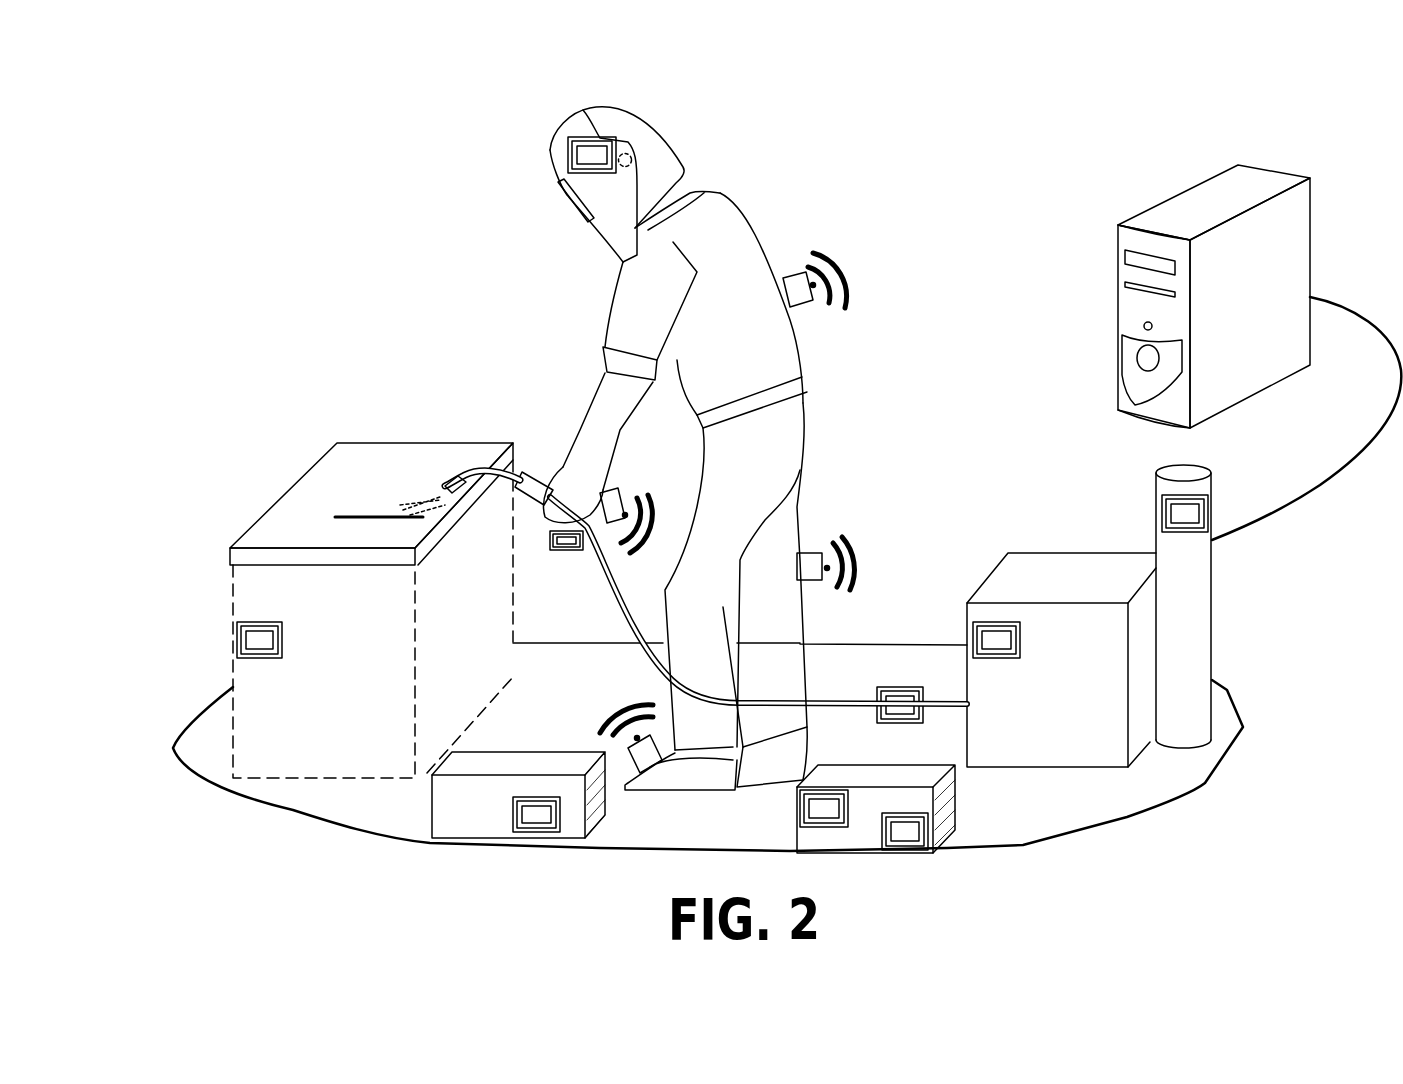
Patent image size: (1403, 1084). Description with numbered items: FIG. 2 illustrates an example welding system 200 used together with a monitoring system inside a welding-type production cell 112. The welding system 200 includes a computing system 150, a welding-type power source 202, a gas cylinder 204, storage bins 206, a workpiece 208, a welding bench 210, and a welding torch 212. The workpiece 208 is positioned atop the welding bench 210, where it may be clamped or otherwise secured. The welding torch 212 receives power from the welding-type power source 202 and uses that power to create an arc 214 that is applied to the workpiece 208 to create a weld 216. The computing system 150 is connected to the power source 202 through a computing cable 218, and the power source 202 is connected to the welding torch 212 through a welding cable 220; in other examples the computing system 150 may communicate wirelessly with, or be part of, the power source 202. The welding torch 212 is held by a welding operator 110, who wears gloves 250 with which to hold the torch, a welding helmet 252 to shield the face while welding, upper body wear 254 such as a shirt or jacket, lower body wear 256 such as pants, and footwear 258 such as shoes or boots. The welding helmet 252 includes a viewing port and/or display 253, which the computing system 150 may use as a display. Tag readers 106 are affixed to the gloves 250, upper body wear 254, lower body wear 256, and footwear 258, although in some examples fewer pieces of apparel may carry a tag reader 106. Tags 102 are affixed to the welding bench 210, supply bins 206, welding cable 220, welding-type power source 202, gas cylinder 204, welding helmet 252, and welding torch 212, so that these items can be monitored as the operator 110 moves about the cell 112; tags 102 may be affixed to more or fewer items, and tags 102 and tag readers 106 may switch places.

The tag 102 is at (598, 137).
The tag reader 106 is at (785, 294).
The welding operator 110 is at (703, 150).
The welding-type production cell 112 is at (150, 746).
The computing system 150 is at (1117, 318).
The welding system 200 is at (428, 188).
The welding-type power source 202 is at (1075, 560).
The gas cylinder 204 is at (1215, 608).
The storage bins 206 is at (528, 752).
The workpiece 208 is at (290, 490).
The welding bench 210 is at (232, 712).
The welding torch 212 is at (548, 472).
The arc 214 is at (443, 470).
The weld 216 is at (405, 495).
The computing cable 218 is at (1300, 497).
The welding cable 220 is at (850, 685).
The gloves 250 is at (590, 445).
The welding helmet 252 is at (550, 148).
The viewing port and/or display 253 is at (556, 205).
The upper body wear 254 is at (740, 205).
The lower body wear 256 is at (694, 500).
The footwear 258 is at (810, 778).